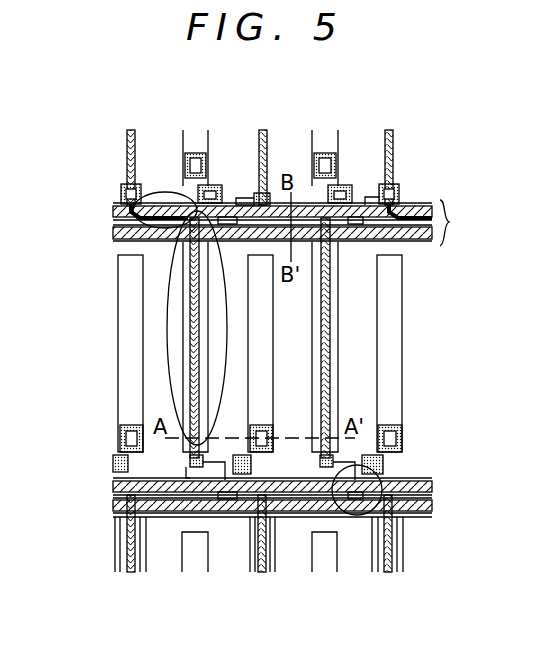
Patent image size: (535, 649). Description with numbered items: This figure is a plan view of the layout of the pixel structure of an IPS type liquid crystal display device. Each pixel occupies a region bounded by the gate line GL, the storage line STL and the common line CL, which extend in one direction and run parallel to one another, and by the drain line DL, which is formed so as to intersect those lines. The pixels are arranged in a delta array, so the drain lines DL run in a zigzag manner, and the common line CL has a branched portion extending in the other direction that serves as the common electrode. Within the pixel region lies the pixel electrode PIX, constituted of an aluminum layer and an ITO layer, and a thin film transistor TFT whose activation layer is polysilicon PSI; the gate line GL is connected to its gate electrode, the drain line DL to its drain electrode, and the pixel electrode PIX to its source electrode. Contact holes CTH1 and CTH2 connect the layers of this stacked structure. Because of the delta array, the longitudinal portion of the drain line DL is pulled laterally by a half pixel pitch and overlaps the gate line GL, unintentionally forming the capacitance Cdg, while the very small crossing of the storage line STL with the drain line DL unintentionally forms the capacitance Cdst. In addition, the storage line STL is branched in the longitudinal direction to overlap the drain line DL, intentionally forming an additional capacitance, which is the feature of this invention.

The capacitance Cdg is at (162, 192).
The drain line DL is at (263, 130).
The contact hole CTH1 is at (389, 196).
The gate line GL is at (115, 213).
The storage line STL is at (115, 236).
The capacitance Cdst is at (150, 238).
The common line CL is at (332, 357).
The pixel electrode PIX is at (394, 311).
The contact hole CTH2 is at (402, 437).
The thin film transistor TFT is at (405, 493).
The polysilicon PSI is at (356, 505).